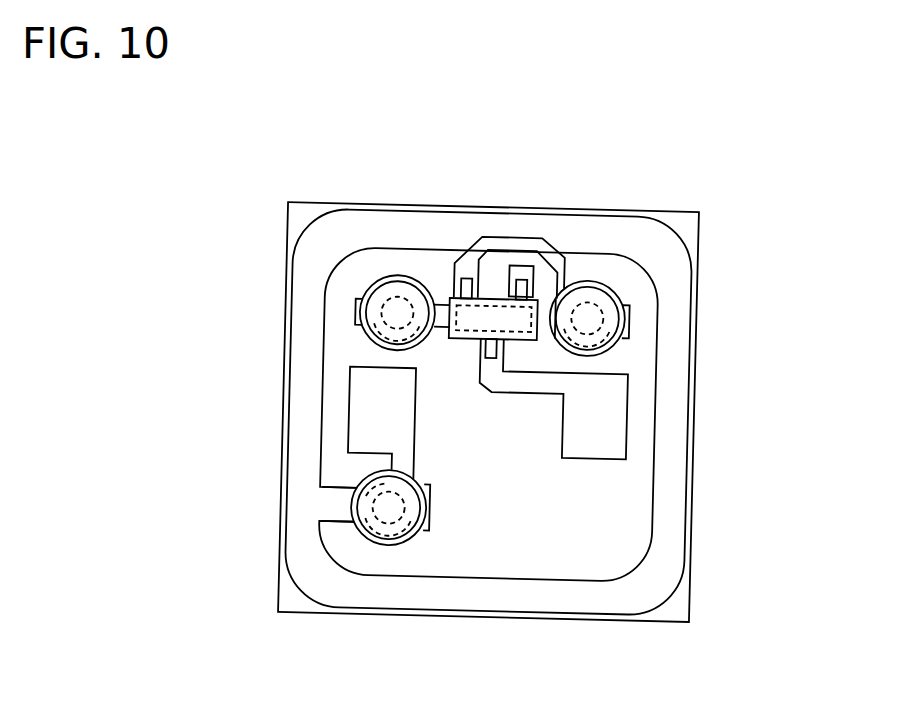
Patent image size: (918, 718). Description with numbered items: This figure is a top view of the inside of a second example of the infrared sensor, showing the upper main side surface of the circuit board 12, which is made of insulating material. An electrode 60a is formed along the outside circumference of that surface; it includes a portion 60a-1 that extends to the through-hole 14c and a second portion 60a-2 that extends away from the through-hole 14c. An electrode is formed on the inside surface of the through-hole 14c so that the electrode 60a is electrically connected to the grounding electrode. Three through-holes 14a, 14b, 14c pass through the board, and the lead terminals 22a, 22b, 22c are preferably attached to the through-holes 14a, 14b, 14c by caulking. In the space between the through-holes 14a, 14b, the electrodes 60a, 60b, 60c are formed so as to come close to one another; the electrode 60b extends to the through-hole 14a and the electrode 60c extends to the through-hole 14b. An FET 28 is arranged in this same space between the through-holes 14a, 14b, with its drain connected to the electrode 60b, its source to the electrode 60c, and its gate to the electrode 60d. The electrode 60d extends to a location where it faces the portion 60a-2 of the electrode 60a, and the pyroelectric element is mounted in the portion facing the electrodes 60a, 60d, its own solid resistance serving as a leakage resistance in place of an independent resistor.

The circuit board 12 is at (678, 603).
The through-hole 14a is at (372, 313).
The through-hole 14b is at (606, 319).
The through-hole 14c is at (362, 503).
The lead terminal 22a is at (378, 287).
The lead terminal 22b is at (590, 292).
The lead terminal 22c is at (388, 548).
The FET 28 is at (493, 297).
The electrode 60a is at (310, 412).
The portion of electrode 60a-1 is at (337, 510).
The second portion of electrode 60a-2 is at (398, 423).
The electrode 60b is at (438, 303).
The electrode 60c is at (523, 244).
The electrode 60d is at (610, 413).